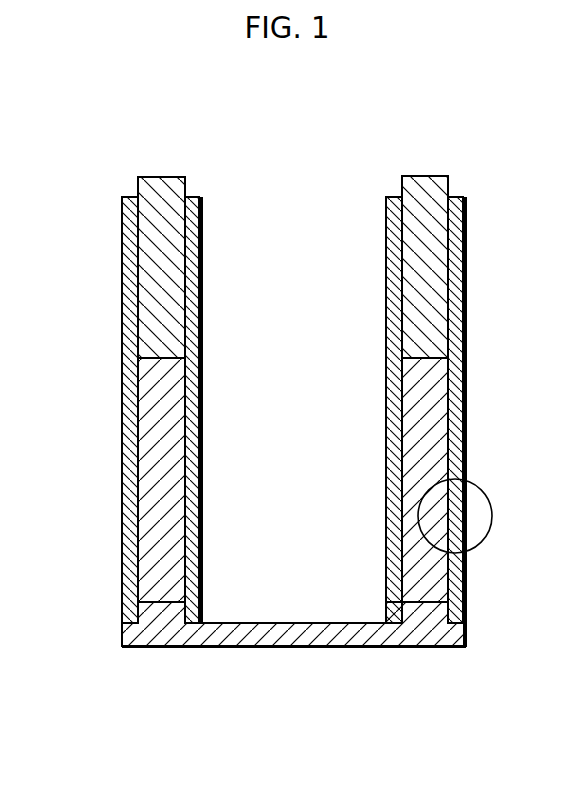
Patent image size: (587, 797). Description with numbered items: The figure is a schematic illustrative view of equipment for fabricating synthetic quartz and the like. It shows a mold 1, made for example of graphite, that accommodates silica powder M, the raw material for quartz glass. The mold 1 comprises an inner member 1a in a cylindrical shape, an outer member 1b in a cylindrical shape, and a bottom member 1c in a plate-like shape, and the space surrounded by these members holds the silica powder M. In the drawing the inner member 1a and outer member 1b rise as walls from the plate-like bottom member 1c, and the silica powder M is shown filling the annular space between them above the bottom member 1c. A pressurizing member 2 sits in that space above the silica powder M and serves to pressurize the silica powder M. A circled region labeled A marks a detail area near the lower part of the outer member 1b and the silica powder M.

The mold 1 is at (287, 482).
The inner member 1a is at (386, 481).
The outer member 1b is at (122, 423).
The bottom member 1c is at (294, 647).
The pressurizing member 2 is at (420, 180).
The silica powder M is at (440, 402).
The region A is at (487, 498).